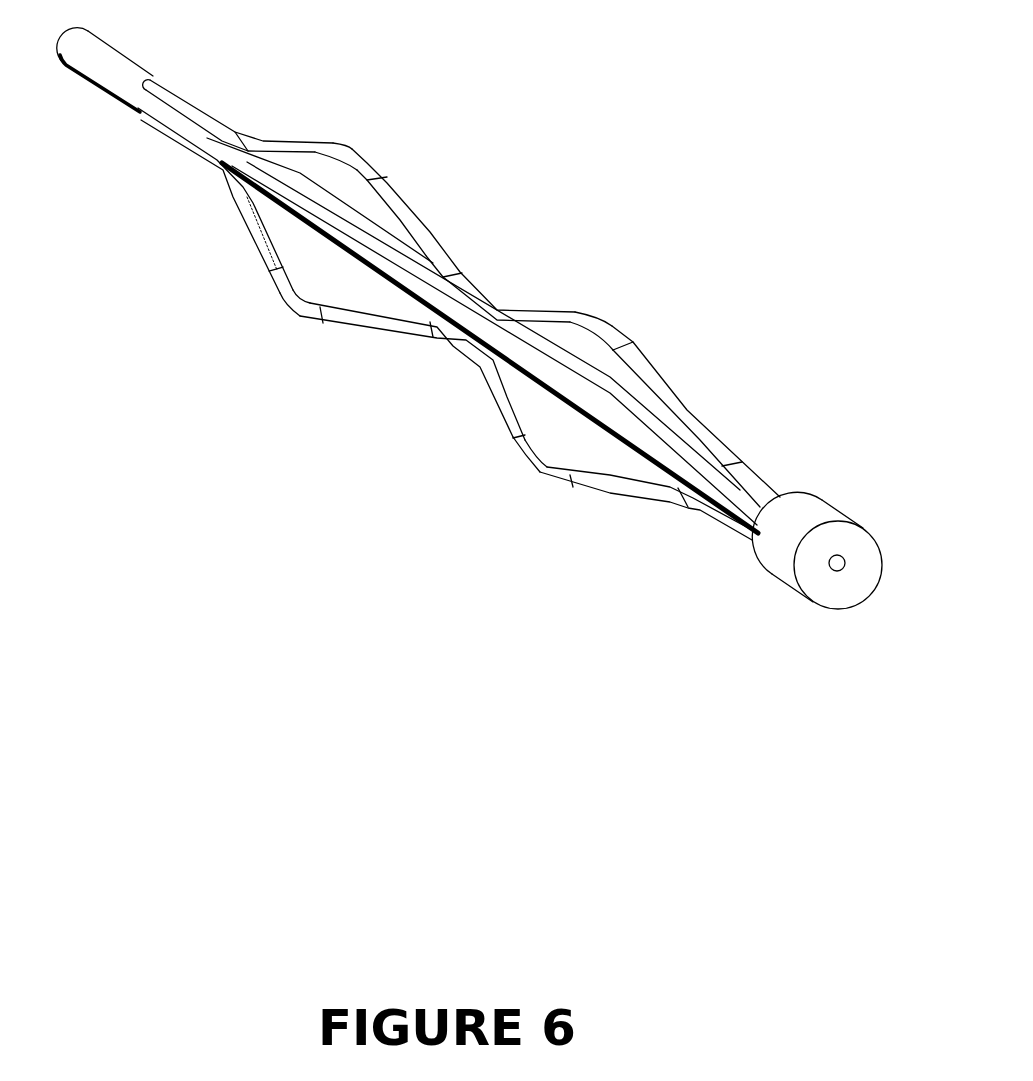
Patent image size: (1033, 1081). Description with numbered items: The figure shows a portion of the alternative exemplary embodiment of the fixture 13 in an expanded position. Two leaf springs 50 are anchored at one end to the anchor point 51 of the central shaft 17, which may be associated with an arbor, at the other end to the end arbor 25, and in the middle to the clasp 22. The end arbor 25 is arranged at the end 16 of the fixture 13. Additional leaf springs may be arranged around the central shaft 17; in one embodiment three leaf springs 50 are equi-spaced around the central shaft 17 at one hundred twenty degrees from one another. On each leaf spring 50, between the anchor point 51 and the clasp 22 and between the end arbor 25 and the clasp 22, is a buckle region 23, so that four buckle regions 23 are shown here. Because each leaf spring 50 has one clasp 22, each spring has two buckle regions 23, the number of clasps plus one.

The fixture 13 is at (566, 163).
The end 16 is at (803, 578).
The central shaft 17 is at (215, 148).
The clasp 22 is at (448, 343).
The buckle region 23 is at (353, 151).
The end arbor 25 is at (806, 503).
The leaf spring 50 is at (413, 220).
The anchor point 51 is at (165, 132).